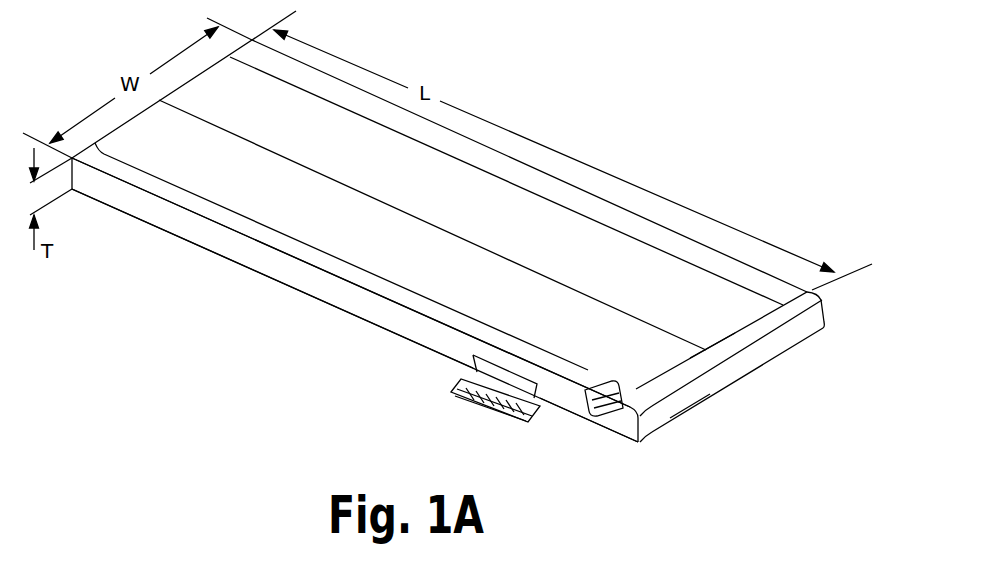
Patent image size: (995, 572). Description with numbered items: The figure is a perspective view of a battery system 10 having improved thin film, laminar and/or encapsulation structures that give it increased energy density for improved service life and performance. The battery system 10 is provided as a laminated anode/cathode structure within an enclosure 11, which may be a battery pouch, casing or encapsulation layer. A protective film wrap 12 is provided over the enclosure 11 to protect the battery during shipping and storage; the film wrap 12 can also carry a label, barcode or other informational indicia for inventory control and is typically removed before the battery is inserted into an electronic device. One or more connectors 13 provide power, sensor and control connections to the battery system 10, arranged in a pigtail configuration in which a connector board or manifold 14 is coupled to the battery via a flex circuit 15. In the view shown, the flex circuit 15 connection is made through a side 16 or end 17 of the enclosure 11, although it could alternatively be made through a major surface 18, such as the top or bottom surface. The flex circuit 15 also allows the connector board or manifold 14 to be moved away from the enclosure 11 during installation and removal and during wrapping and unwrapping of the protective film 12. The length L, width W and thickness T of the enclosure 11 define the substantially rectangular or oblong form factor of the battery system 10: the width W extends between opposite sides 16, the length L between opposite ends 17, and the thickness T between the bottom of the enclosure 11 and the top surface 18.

The battery system 10 is at (750, 96).
The enclosure 11 is at (760, 338).
The protective film wrap 12 is at (431, 194).
The connector 13 is at (450, 405).
The connector board or manifold 14 is at (483, 408).
The flex circuit 15 is at (590, 412).
The side 16 is at (210, 246).
The end 17 is at (693, 409).
The major surface 18 is at (712, 347).